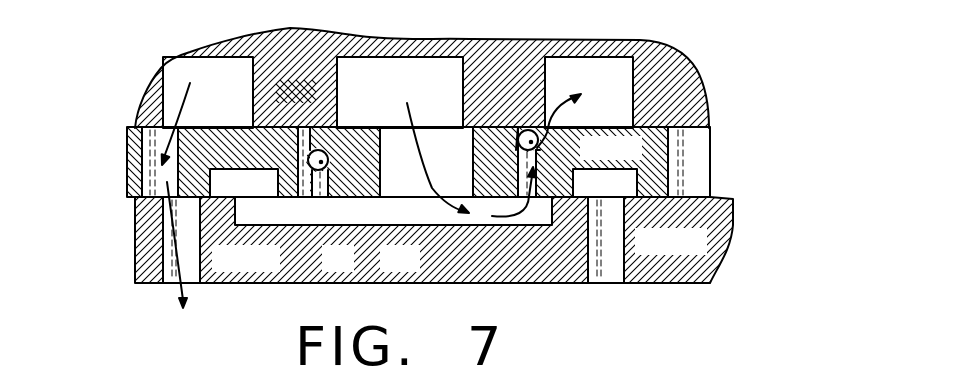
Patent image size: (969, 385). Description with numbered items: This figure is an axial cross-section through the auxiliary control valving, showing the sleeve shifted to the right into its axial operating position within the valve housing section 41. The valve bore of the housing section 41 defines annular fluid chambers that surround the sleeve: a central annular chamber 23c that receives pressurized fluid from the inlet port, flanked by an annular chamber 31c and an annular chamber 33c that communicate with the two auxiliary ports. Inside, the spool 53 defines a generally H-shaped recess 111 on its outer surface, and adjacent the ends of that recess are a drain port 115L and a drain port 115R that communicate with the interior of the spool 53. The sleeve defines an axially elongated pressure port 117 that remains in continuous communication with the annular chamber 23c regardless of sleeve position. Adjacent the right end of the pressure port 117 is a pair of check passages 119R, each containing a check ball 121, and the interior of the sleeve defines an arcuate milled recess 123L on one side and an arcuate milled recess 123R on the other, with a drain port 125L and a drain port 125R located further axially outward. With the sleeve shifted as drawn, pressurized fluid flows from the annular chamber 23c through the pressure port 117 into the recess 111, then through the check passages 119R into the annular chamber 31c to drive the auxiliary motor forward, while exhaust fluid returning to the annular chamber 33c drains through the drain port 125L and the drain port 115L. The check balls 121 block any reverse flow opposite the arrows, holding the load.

The valve housing section 41 is at (697, 97).
The annular chamber 33c is at (221, 77).
The annular chamber 23c is at (384, 77).
The annular chamber 31c is at (607, 70).
The check ball 121 is at (316, 130).
The drain port 125L is at (130, 160).
The drain port 125R is at (690, 157).
The check passages 119R is at (545, 163).
The arcuate milled recess 123L is at (231, 180).
The arcuate milled recess 123R is at (624, 182).
The H-shaped recess 111 is at (358, 212).
The pressure port 117 is at (395, 173).
The spool 53 is at (503, 258).
The drain port 115L is at (190, 255).
The drain port 115R is at (612, 265).